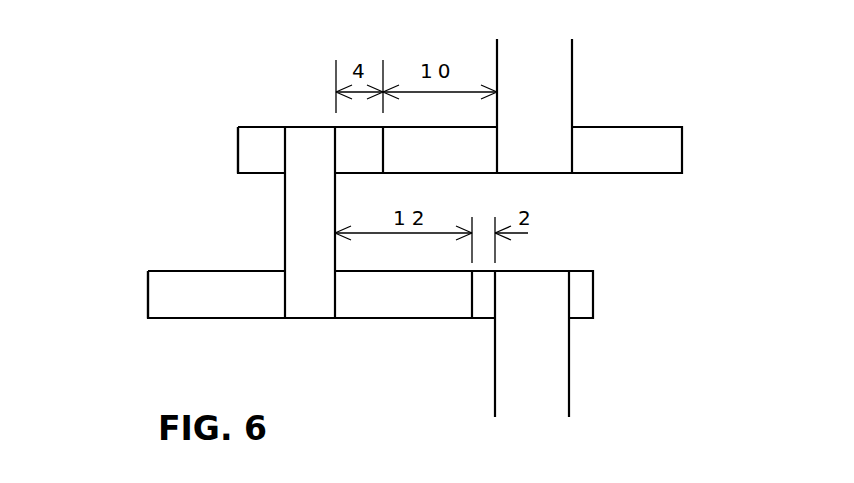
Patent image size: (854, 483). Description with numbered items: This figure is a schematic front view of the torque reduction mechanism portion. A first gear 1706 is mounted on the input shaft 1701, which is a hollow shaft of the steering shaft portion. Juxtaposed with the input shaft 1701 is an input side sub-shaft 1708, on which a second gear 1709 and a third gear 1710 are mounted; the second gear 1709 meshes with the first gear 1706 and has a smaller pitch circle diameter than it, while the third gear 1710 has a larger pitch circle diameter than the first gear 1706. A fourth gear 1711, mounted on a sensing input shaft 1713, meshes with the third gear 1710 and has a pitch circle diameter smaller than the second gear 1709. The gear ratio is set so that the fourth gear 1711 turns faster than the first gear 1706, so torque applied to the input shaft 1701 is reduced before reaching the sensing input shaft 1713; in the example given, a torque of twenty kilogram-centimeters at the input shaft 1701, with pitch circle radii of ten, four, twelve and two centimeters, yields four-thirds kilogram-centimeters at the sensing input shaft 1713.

The input shaft 1701 is at (572, 77).
The first gear 1706 is at (650, 130).
The input side sub-shaft 1708 is at (285, 218).
The second gear 1709 is at (247, 127).
The third gear 1710 is at (202, 268).
The fourth gear 1711 is at (595, 287).
The sensing input shaft 1713 is at (569, 377).